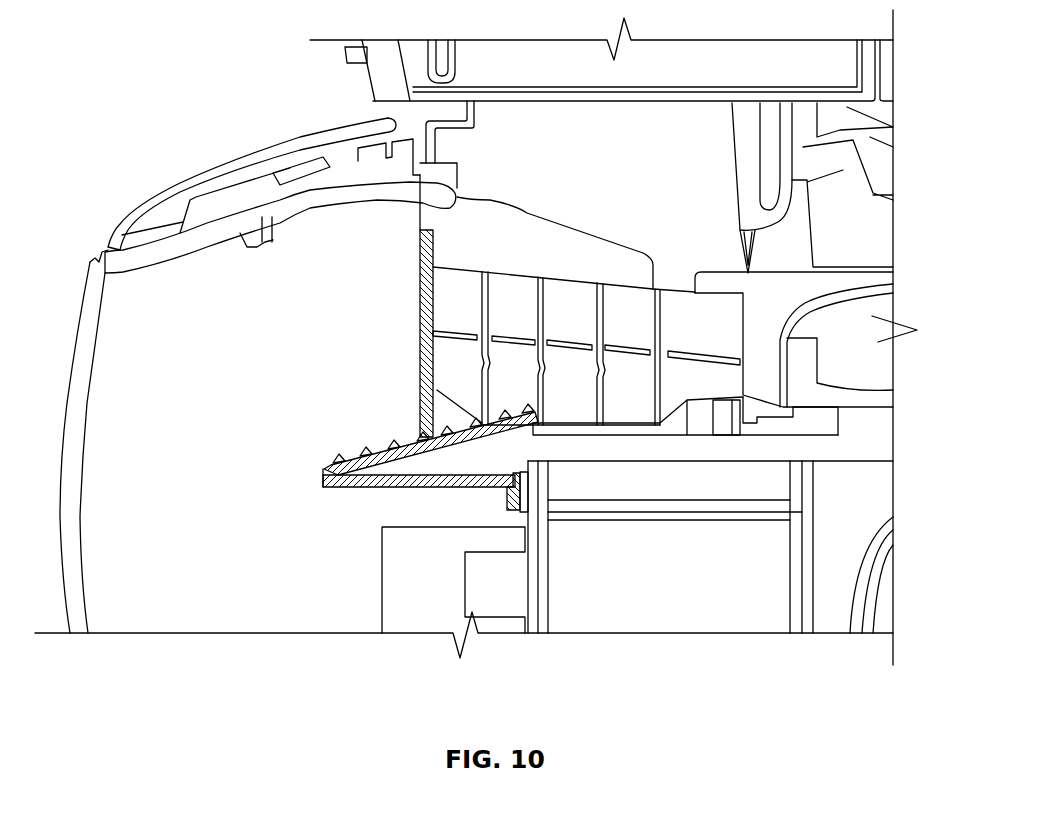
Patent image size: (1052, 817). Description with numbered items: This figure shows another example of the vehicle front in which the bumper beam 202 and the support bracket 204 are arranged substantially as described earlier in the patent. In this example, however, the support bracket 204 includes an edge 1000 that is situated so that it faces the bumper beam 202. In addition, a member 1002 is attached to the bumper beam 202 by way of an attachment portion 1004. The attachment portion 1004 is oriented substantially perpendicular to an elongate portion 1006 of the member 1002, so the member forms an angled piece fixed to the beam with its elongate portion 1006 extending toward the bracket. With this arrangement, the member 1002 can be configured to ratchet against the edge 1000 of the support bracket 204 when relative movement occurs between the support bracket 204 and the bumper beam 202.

The bumper beam 202 is at (813, 520).
The support bracket 204 is at (437, 248).
The edge 1000 is at (410, 443).
The member 1002 is at (535, 413).
The attachment portion 1004 is at (507, 502).
The elongate portion 1006 is at (395, 437).